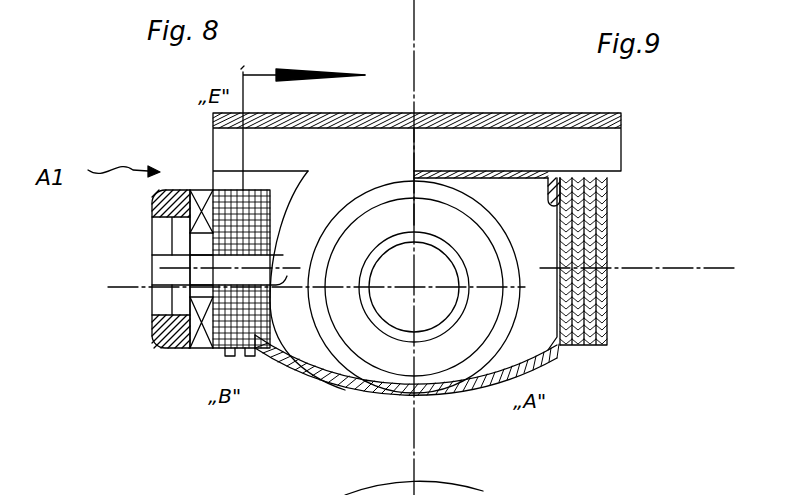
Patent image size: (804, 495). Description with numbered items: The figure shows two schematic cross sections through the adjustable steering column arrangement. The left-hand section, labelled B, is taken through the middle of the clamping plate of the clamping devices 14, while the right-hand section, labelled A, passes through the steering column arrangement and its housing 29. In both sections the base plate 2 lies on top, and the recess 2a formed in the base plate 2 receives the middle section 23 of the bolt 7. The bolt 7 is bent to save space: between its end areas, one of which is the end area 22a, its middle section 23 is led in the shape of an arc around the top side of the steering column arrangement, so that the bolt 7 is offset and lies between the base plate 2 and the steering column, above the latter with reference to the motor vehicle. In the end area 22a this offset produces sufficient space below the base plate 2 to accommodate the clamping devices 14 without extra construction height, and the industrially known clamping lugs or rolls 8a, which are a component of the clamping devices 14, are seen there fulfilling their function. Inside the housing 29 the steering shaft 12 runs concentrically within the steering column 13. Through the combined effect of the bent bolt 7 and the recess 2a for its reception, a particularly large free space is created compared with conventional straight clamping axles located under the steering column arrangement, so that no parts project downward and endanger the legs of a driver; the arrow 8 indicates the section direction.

In FIG. 9, the base plate 2 is at (620, 114).
In FIG. 8, the recess 2a is at (480, 494).
In FIG. 8, the bolt 7 is at (375, 148).
In FIG. 8, the seal housing 8 is at (335, 163).
In FIG. 8, the clamping lugs or rolls 8a is at (207, 190).
In FIG. 8, the steering shaft 12 is at (392, 327).
In FIG. 8, the steering column 13 is at (430, 384).
In FIG. 8, the clamping devices 14 is at (258, 358).
In FIG. 8, the end area 22a is at (150, 257).
In FIG. 8, the middle section 23 is at (418, 126).
In FIG. 8, the housing 29 is at (560, 322).